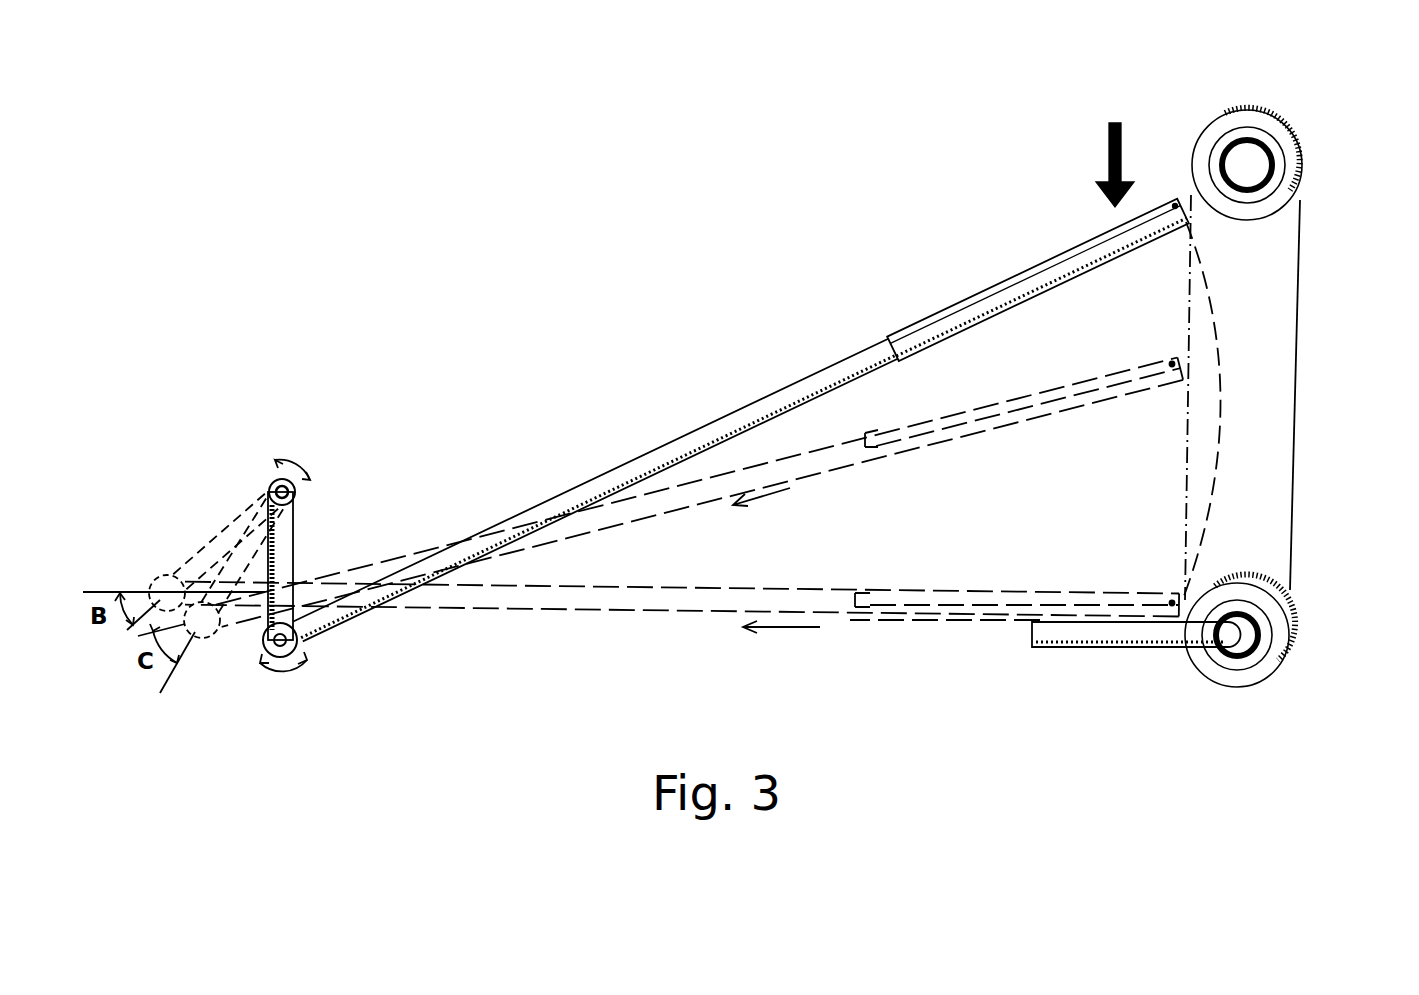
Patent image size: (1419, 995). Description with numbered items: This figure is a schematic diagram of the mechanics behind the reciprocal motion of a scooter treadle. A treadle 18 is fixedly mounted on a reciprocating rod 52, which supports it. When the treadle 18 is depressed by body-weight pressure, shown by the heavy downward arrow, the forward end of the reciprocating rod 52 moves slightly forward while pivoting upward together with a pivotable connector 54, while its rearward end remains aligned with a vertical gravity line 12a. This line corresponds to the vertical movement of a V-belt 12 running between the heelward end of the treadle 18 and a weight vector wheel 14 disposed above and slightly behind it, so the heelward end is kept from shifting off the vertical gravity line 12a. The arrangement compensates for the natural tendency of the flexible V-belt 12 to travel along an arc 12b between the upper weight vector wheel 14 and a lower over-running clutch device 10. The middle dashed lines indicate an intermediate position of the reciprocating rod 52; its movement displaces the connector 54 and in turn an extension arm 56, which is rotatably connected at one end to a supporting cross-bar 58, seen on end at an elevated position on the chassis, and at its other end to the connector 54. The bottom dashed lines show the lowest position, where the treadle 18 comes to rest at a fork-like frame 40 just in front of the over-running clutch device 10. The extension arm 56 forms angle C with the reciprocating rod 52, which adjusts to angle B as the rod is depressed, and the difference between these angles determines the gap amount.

The over-running clutch device 10 is at (1272, 672).
The V-belt 12 is at (1300, 325).
The vertical gravity line 12a is at (1184, 438).
The arc 12b is at (1208, 503).
The weight vector wheel 14 is at (1290, 129).
The treadle 18 is at (1015, 278).
The fork-like frame 40 is at (1105, 650).
The reciprocating rod 52 is at (752, 402).
The connector 54 is at (296, 645).
The extension arm 56 is at (295, 535).
The supporting cross-bar 58 is at (270, 490).